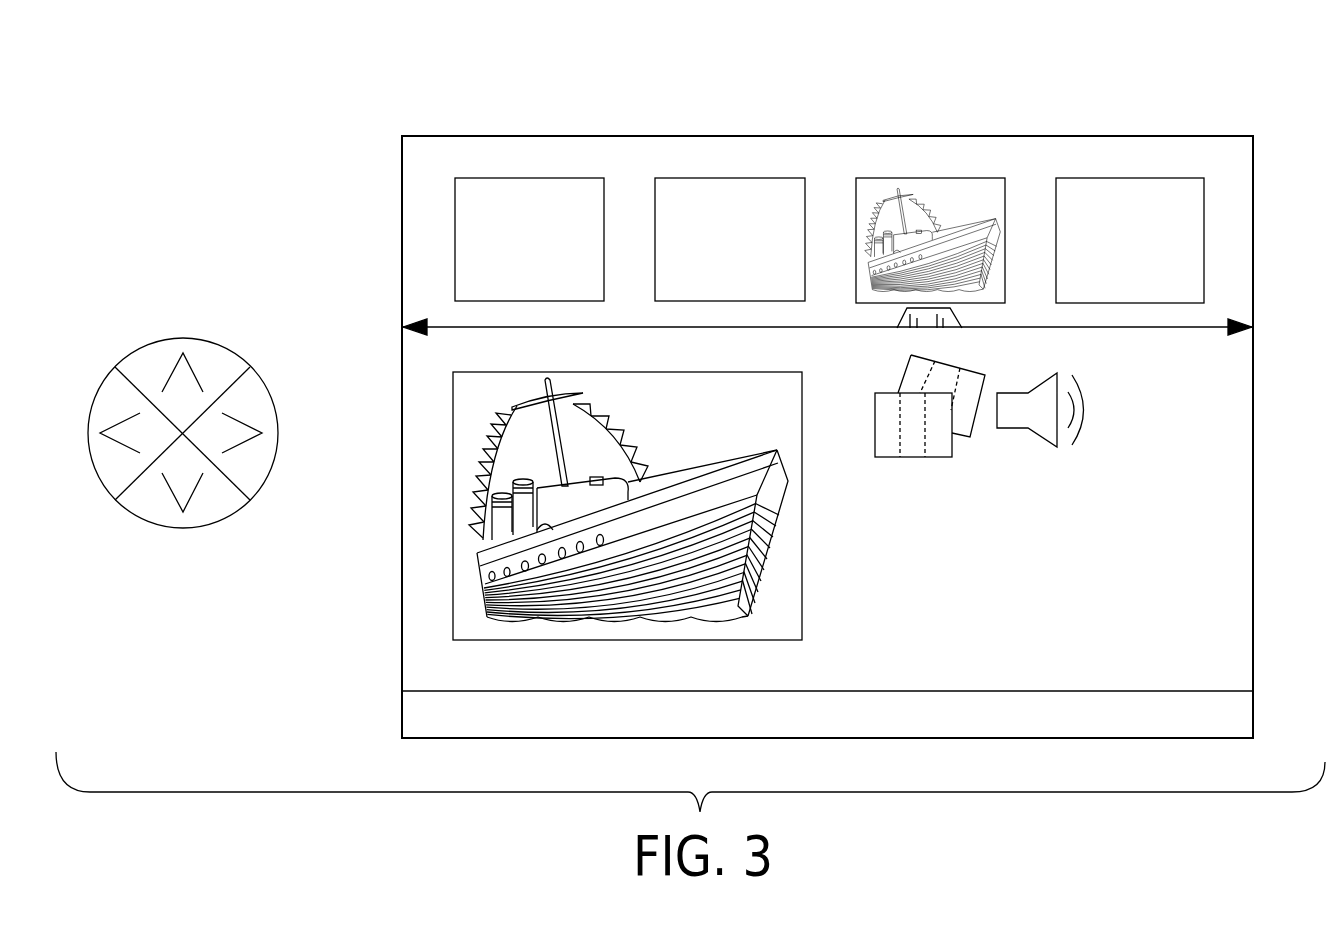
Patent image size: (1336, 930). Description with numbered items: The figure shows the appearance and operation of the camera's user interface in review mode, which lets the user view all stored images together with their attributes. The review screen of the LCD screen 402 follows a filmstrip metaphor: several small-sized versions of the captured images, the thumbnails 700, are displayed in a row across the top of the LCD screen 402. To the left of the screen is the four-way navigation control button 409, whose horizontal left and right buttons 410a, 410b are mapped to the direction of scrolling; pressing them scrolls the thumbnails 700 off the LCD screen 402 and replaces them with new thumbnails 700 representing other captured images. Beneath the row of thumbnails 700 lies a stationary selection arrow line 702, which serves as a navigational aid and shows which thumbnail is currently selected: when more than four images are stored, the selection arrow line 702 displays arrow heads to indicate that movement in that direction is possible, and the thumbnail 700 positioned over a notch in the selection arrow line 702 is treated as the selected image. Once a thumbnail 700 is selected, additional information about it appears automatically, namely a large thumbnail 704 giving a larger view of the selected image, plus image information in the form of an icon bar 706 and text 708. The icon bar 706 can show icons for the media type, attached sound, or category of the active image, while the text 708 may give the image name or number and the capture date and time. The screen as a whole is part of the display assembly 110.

The LCD screen 110 is at (852, 50).
The LCD screen 402 is at (402, 713).
The four-way navigation control button 409 is at (165, 337).
The left button 410a is at (102, 488).
The right button 410b is at (262, 488).
The thumbnails 700 is at (1110, 178).
The selection arrow line 702 is at (450, 322).
The large thumbnail 704 is at (453, 424).
The icon bar 706 is at (1200, 408).
The text 708 is at (1200, 525).